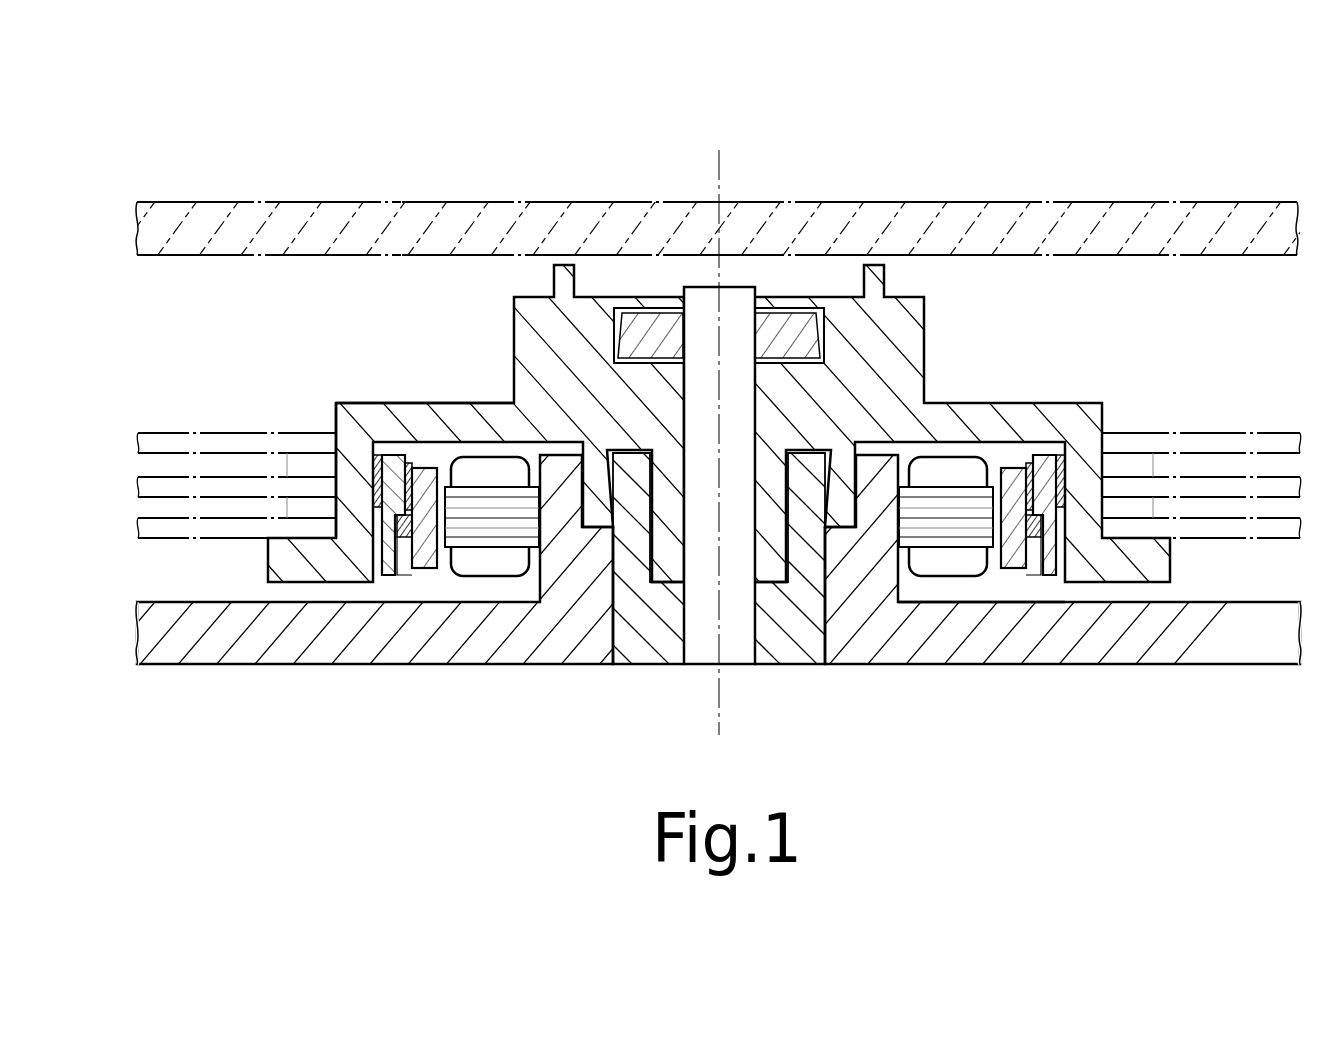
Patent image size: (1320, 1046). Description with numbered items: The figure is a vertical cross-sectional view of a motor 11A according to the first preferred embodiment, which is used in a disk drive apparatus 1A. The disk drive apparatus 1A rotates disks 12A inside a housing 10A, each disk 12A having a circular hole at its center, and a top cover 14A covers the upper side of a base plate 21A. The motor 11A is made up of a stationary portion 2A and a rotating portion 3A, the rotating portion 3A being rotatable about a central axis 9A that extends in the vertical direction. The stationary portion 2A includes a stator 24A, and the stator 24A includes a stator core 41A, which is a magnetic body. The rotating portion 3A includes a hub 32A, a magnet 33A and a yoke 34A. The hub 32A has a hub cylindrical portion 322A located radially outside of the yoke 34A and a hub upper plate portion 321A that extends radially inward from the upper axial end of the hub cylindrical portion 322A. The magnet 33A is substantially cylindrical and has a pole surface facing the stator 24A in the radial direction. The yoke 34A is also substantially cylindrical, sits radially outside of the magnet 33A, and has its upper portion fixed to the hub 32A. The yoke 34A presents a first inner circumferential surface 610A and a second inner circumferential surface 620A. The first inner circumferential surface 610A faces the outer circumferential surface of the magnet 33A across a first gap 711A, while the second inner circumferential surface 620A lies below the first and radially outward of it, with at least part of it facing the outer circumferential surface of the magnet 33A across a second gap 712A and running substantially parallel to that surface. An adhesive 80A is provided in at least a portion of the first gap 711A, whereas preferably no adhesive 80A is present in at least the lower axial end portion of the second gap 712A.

The disk drive apparatus 1A is at (383, 107).
The housing 10A is at (278, 168).
The top cover 14A is at (1090, 208).
The disk 12A is at (1255, 450).
The motor 11A is at (475, 283).
The central axis 9A is at (718, 164).
The rotating portion 3A is at (845, 280).
The hub 32A is at (1035, 385).
The hub upper plate portion 321A is at (412, 412).
The hub cylindrical portion 322A is at (343, 490).
The base plate 21A is at (205, 650).
The stator 24A is at (933, 587).
The stator core 41A is at (917, 535).
The stationary portion 2A is at (688, 685).
The magnet 33A is at (425, 553).
The yoke 34A is at (390, 567).
The first inner circumferential surface 610A is at (415, 500).
The second inner circumferential surface 620A is at (396, 565).
The first gap 711A is at (1022, 493).
The second gap 712A is at (1034, 562).
The adhesive 80A is at (1032, 520).